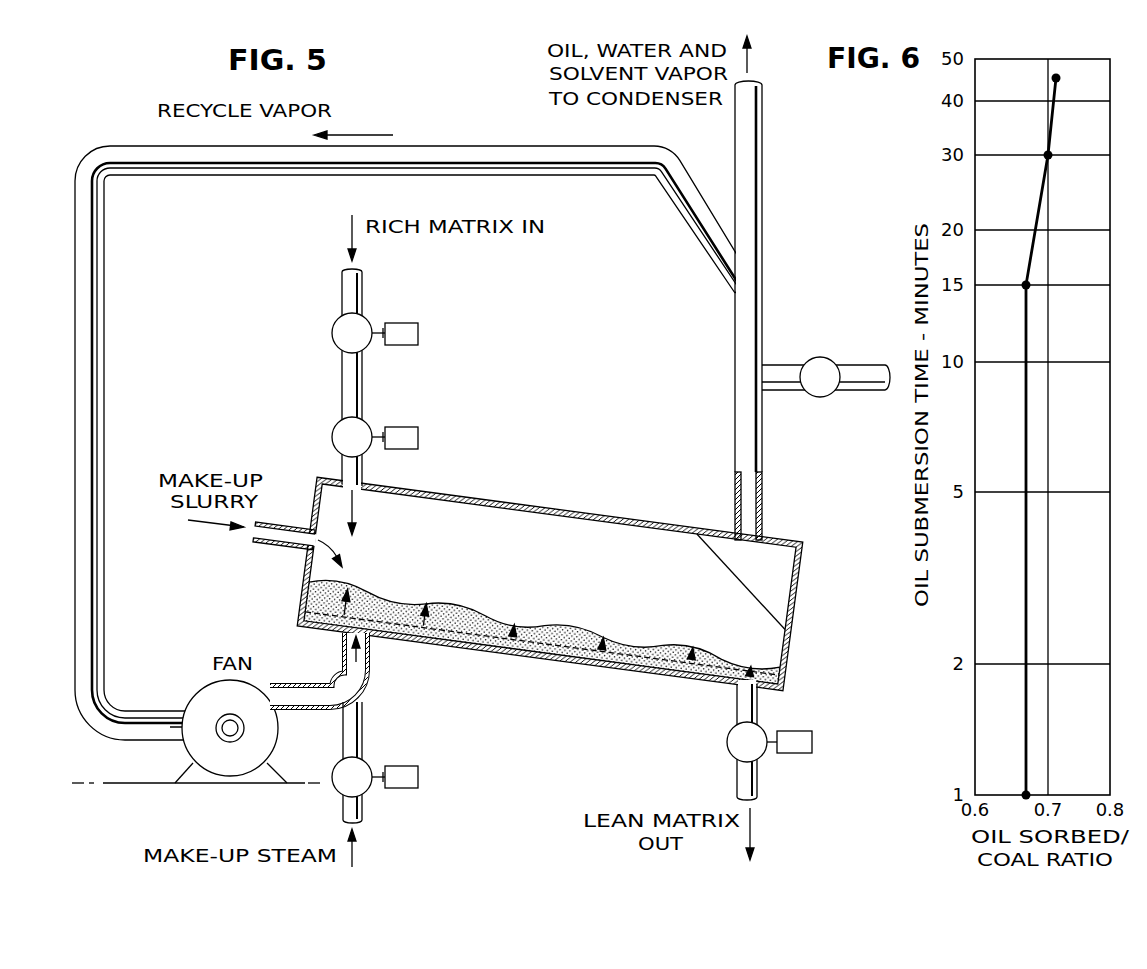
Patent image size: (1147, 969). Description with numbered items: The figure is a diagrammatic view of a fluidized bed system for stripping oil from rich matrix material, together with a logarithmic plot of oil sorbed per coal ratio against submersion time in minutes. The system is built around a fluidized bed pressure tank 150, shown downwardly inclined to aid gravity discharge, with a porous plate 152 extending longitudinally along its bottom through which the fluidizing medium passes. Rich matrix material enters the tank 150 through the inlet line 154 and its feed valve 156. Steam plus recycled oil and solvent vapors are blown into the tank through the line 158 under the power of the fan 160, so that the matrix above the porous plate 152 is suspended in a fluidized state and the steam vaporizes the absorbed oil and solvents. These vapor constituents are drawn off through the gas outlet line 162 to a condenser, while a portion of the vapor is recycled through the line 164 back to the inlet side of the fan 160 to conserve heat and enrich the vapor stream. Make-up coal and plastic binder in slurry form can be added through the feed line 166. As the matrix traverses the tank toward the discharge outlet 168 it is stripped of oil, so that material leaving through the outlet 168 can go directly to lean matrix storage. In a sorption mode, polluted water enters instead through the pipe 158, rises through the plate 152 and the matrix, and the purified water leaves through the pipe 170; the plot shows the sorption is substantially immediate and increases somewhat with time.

The fluidized bed pressure tank 150 is at (534, 497).
The porous plate 152 is at (570, 648).
The inlet line 154 is at (342, 374).
The feed valve 156 is at (333, 435).
The fluidizing medium line 158 is at (364, 736).
The fan 160 is at (205, 696).
The gas outlet line 162 is at (763, 173).
The recycle line 164 is at (517, 150).
The feed line 166 is at (282, 545).
The discharge outlet 168 is at (738, 710).
The water discharge pipe 170 is at (782, 366).